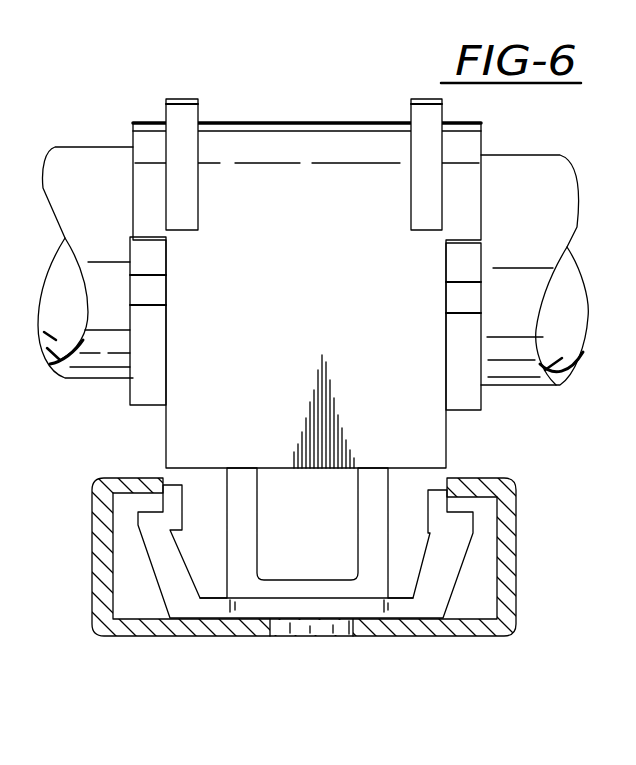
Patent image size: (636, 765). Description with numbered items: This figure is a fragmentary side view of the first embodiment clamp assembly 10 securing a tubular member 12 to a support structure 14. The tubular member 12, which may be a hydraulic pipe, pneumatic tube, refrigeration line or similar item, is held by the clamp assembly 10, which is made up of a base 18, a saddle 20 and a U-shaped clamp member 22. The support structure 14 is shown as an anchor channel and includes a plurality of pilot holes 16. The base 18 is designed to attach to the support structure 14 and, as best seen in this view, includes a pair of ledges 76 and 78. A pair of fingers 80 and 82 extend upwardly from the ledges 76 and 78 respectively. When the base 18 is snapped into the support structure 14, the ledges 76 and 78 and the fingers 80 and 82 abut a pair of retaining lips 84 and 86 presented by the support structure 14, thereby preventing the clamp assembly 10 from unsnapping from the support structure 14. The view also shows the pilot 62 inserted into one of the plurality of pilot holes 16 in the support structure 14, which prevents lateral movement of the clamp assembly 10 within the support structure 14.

The clamp assembly 10 is at (128, 124).
The tubular member 12 is at (539, 153).
The support structure 14 is at (519, 583).
The pilot holes 16 is at (270, 620).
The base 18 is at (157, 583).
The saddle 20 is at (473, 411).
The U-shaped clamp member 22 is at (334, 123).
The pilot 62 is at (329, 637).
The ledge 76 is at (462, 507).
The ledge 78 is at (160, 504).
The finger 80 is at (428, 505).
The finger 82 is at (184, 506).
The retaining lip 84 is at (492, 481).
The retaining lip 86 is at (122, 476).